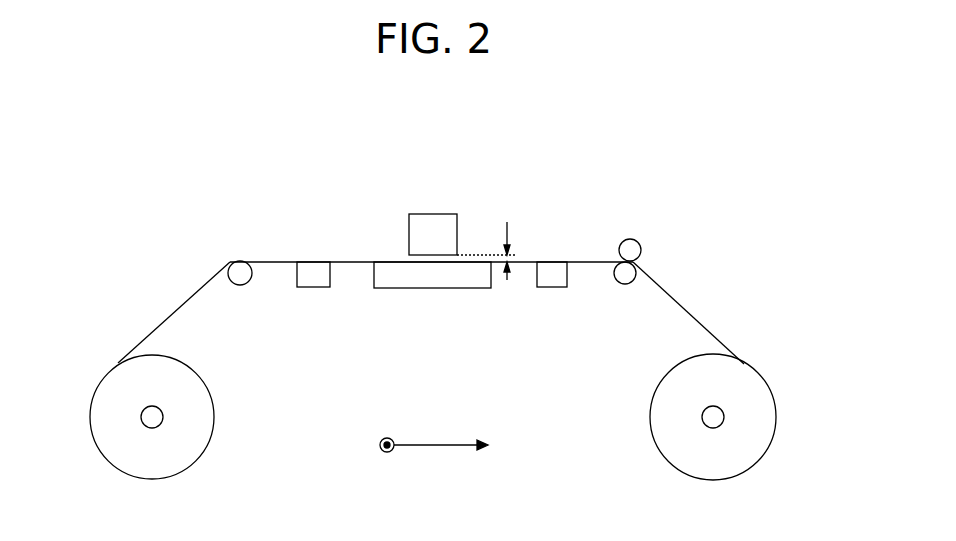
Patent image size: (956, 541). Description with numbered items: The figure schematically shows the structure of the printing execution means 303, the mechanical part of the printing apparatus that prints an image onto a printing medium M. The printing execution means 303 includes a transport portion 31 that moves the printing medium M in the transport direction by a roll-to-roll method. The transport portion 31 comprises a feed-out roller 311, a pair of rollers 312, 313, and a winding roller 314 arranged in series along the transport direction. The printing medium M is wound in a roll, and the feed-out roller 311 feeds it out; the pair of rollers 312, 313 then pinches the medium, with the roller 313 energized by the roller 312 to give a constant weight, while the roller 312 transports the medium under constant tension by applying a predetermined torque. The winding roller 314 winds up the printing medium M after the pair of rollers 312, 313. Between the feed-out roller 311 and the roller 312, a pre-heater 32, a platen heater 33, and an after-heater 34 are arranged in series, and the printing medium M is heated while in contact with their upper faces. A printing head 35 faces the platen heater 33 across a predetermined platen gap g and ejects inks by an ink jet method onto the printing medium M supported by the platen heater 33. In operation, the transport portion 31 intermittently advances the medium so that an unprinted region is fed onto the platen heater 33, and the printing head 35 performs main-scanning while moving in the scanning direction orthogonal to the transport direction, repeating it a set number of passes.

The printing execution means 303 is at (167, 122).
The transport portion 31 is at (307, 432).
The printing medium M is at (175, 313).
The feed-out roller 311 is at (145, 415).
The roller 312 is at (625, 277).
The roller 313 is at (633, 245).
The winding roller 314 is at (708, 417).
The pre-heater 32 is at (313, 278).
The platen heater 33 is at (435, 280).
The after-heater 34 is at (550, 280).
The printing head 35 is at (435, 222).
The platen gap g is at (495, 249).